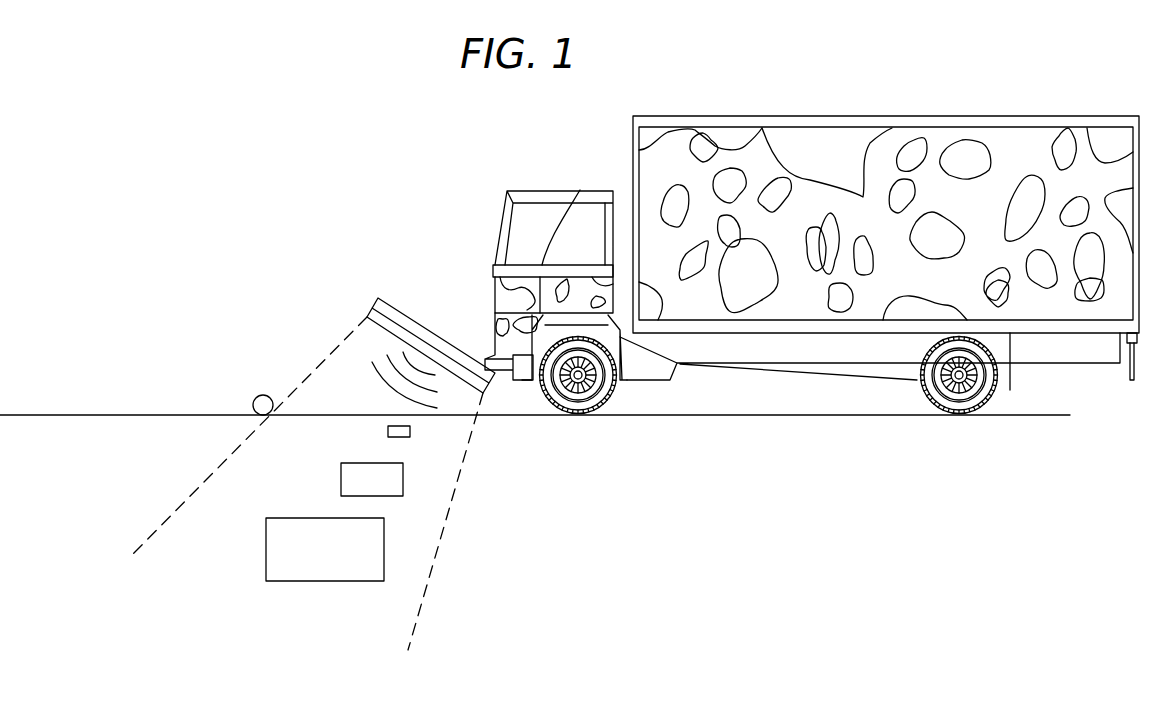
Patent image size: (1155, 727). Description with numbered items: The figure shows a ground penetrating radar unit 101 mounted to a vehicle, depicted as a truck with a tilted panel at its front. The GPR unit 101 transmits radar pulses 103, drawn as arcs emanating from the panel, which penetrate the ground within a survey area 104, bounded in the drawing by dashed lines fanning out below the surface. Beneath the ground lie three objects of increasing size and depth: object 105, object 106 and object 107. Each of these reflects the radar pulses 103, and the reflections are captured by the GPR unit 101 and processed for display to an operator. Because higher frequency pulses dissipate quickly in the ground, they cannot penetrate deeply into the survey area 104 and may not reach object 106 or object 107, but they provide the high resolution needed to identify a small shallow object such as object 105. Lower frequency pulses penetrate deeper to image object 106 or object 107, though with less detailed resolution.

The ground penetrating radar unit 101 is at (378, 298).
The radar pulses 103 is at (366, 372).
The survey area 104 is at (256, 400).
The object 105 is at (388, 430).
The object 106 is at (341, 477).
The object 107 is at (266, 543).